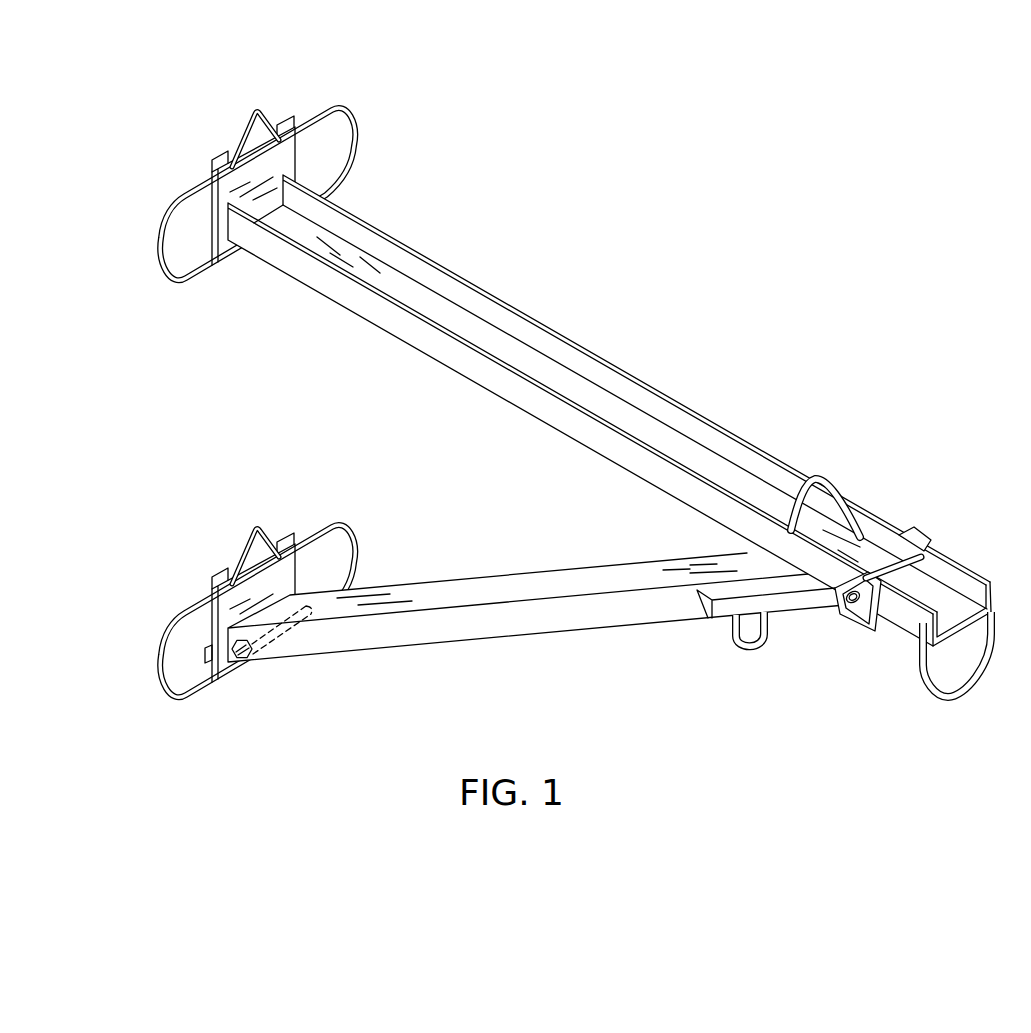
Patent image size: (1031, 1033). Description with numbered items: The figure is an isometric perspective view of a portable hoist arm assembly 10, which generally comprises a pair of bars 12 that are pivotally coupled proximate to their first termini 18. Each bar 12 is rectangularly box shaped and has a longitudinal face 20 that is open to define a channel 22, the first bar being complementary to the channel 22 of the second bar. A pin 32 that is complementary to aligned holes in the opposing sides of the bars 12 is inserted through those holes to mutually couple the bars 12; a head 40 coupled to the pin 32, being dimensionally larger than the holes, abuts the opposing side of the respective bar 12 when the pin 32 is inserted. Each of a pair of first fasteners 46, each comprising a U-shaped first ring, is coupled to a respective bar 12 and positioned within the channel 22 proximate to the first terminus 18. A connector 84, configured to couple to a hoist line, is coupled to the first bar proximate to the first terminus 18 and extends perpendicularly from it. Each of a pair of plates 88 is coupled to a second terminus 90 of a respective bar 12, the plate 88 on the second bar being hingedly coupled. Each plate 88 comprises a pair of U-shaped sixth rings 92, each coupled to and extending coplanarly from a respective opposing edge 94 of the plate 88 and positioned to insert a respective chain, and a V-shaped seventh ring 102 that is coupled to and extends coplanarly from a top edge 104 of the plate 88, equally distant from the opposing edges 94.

The portable hoist arm assembly 10 is at (789, 247).
The bar 12 is at (470, 590).
The first terminus 18 is at (609, 410).
The longitudinal face 20 is at (475, 330).
The channel 22 is at (537, 357).
The pin 32 is at (890, 560).
The head 40 is at (842, 612).
The first fastener 46 is at (808, 480).
The connector 84 is at (953, 704).
The plate 88 is at (255, 168).
The second terminus 90 is at (277, 212).
The sixth ring 92 is at (323, 540).
The opposing edge 94 is at (300, 575).
The seventh ring 102 is at (258, 110).
The top edge 104 is at (288, 125).